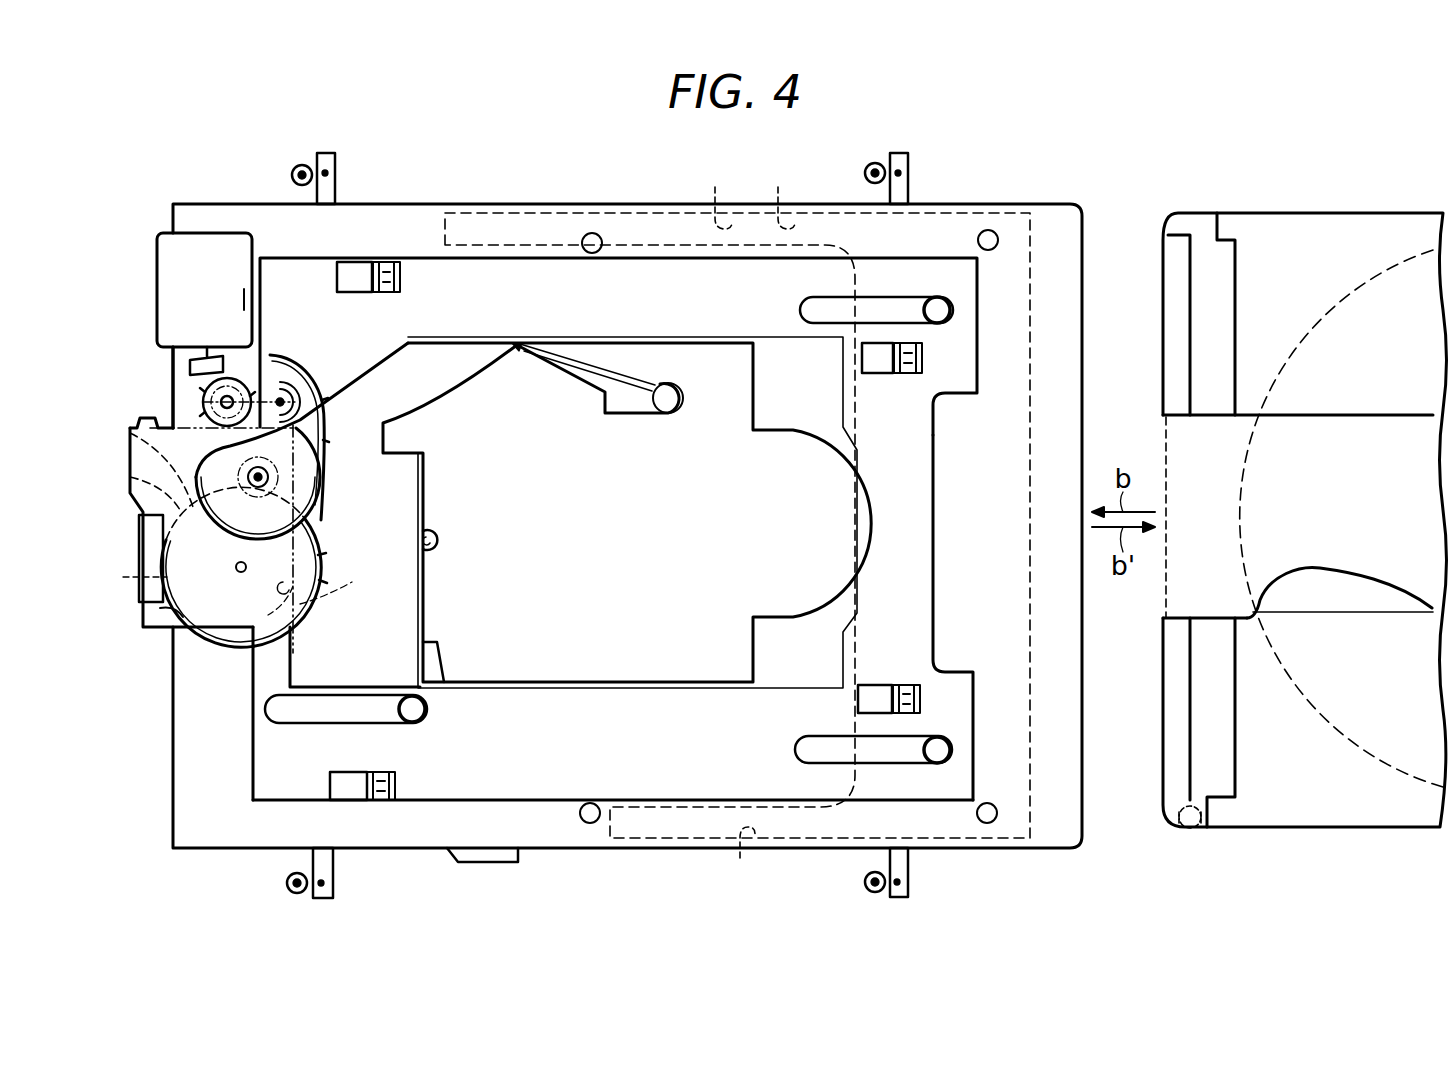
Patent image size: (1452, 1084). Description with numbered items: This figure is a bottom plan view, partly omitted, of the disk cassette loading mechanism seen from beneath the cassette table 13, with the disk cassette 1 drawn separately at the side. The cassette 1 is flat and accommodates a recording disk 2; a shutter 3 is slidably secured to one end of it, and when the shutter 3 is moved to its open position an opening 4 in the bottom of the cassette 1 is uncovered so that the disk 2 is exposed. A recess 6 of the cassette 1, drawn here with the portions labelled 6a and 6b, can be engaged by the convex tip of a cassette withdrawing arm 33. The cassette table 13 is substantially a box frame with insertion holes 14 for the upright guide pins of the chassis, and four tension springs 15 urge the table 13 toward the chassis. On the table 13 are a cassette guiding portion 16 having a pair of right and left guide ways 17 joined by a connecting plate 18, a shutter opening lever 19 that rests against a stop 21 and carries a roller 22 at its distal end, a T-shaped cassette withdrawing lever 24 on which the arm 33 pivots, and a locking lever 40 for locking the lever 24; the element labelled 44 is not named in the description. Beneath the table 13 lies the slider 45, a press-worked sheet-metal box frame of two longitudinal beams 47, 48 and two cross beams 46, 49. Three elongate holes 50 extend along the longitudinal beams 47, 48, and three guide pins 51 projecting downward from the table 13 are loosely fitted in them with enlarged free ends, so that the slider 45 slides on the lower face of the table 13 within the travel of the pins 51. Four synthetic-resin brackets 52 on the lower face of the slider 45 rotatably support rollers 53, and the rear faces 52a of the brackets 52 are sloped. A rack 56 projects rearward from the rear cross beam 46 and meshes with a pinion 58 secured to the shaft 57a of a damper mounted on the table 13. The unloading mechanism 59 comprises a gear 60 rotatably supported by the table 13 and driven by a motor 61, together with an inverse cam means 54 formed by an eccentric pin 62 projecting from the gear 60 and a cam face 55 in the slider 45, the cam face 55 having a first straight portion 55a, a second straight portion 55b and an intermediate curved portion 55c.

The disk cassette 1 is at (1245, 208).
The recording disk 2 is at (1363, 283).
The shutter 3 is at (1180, 442).
The opening 4 is at (1338, 600).
The recess 6 is at (1192, 832).
The corner portion 6a is at (1183, 832).
The corner portion 6b is at (1200, 832).
The cassette table 13 is at (437, 200).
The insertion holes 14 is at (592, 233).
The tension springs 15 is at (292, 175).
The cassette guiding portion 16 is at (715, 193).
The guide ways 17 is at (759, 527).
The connecting plate 18 is at (1032, 300).
The shutter opening lever 19 is at (627, 413).
The stop 21 is at (530, 353).
The roller 22 is at (680, 390).
The cassette withdrawing lever 24 is at (442, 657).
The cassette withdrawing arm 33 is at (478, 862).
The locking lever 40 is at (433, 560).
The pin 44 is at (440, 530).
The slider 45 is at (253, 707).
The rear cross beam 46 is at (128, 425).
The longitudinal beam 47 is at (656, 282).
The longitudinal beam 48 is at (538, 780).
The cross beam 49 is at (917, 570).
The elongate holes 50 is at (875, 305).
The guide pins 51 is at (937, 300).
The brackets 52 is at (352, 275).
The rear faces 52a is at (352, 292).
The rollers 53 is at (398, 270).
The inverse cam means 54 is at (152, 547).
The cam face 55 is at (133, 440).
The first straight portion 55a is at (147, 477).
The second straight portion 55b is at (183, 607).
The intermediate curved portion 55c is at (121, 577).
The rack 56 is at (150, 417).
The shaft 57a is at (248, 400).
The pinion 58 is at (230, 395).
The unloading mechanism 59 is at (137, 333).
The gear 60 is at (320, 543).
The motor 61 is at (163, 243).
The eccentric pin 62 is at (287, 479).